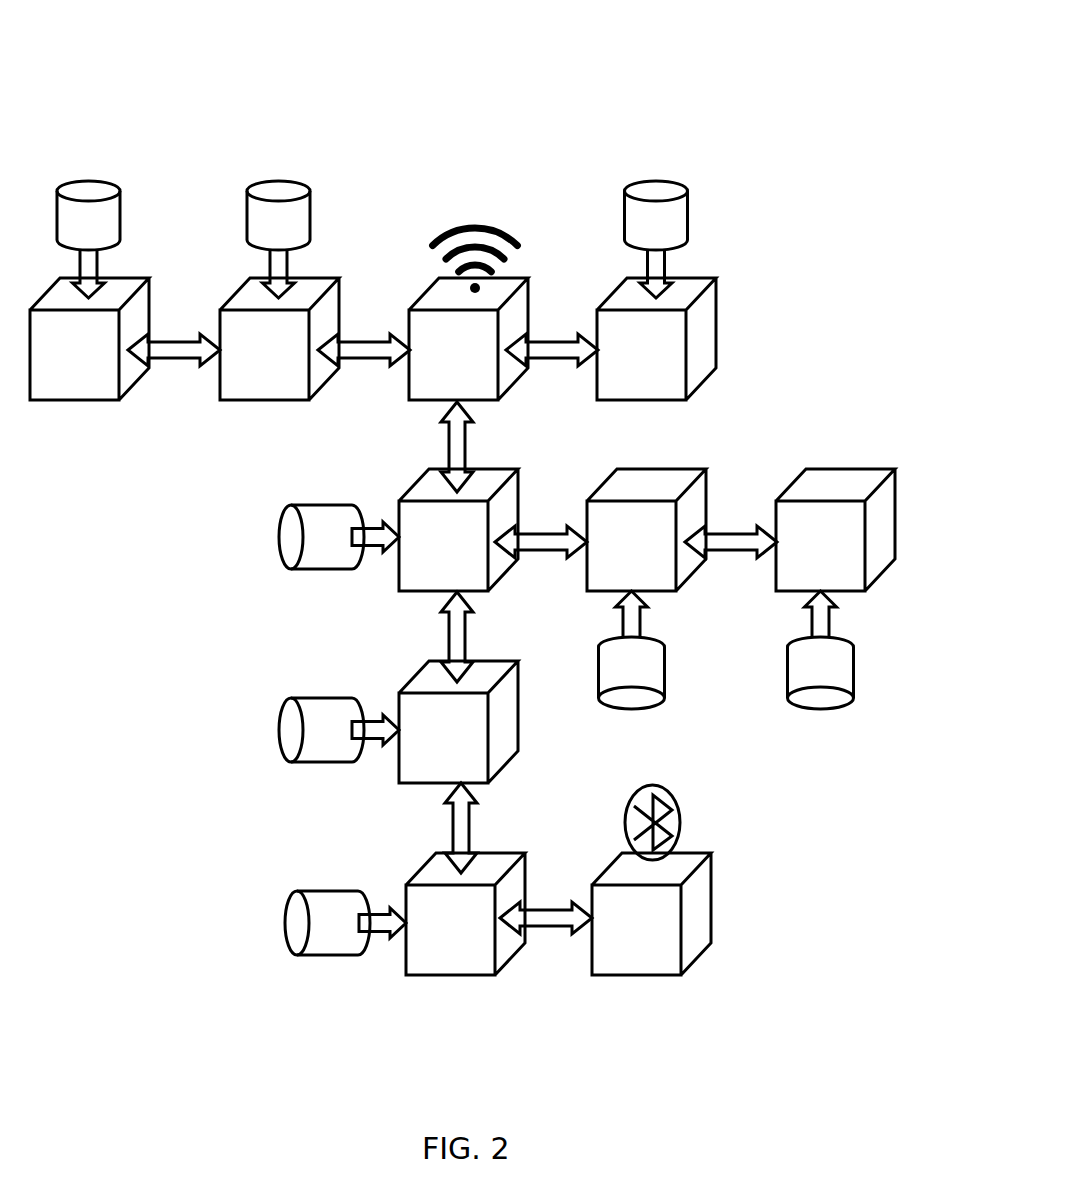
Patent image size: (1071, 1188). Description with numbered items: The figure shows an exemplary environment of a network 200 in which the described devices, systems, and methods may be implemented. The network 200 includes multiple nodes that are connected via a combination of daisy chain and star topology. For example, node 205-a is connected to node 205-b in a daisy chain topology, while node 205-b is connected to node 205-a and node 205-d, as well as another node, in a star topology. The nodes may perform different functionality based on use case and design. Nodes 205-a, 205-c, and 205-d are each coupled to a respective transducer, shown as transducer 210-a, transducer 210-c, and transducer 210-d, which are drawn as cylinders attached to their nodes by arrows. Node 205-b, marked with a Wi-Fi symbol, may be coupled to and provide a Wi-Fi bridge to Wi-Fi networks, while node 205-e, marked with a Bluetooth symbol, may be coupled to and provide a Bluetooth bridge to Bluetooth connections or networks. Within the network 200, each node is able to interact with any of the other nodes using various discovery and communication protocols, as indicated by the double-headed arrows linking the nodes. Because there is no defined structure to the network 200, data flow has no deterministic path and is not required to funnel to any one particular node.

The network 200 is at (742, 80).
The node 205-a is at (717, 330).
The node 205-b is at (510, 390).
The node 205-c is at (865, 468).
The node 205-d is at (399, 577).
The node 205-e is at (712, 906).
The transducer 210-a is at (689, 213).
The transducer 210-c is at (833, 710).
The transducer 210-d is at (279, 537).